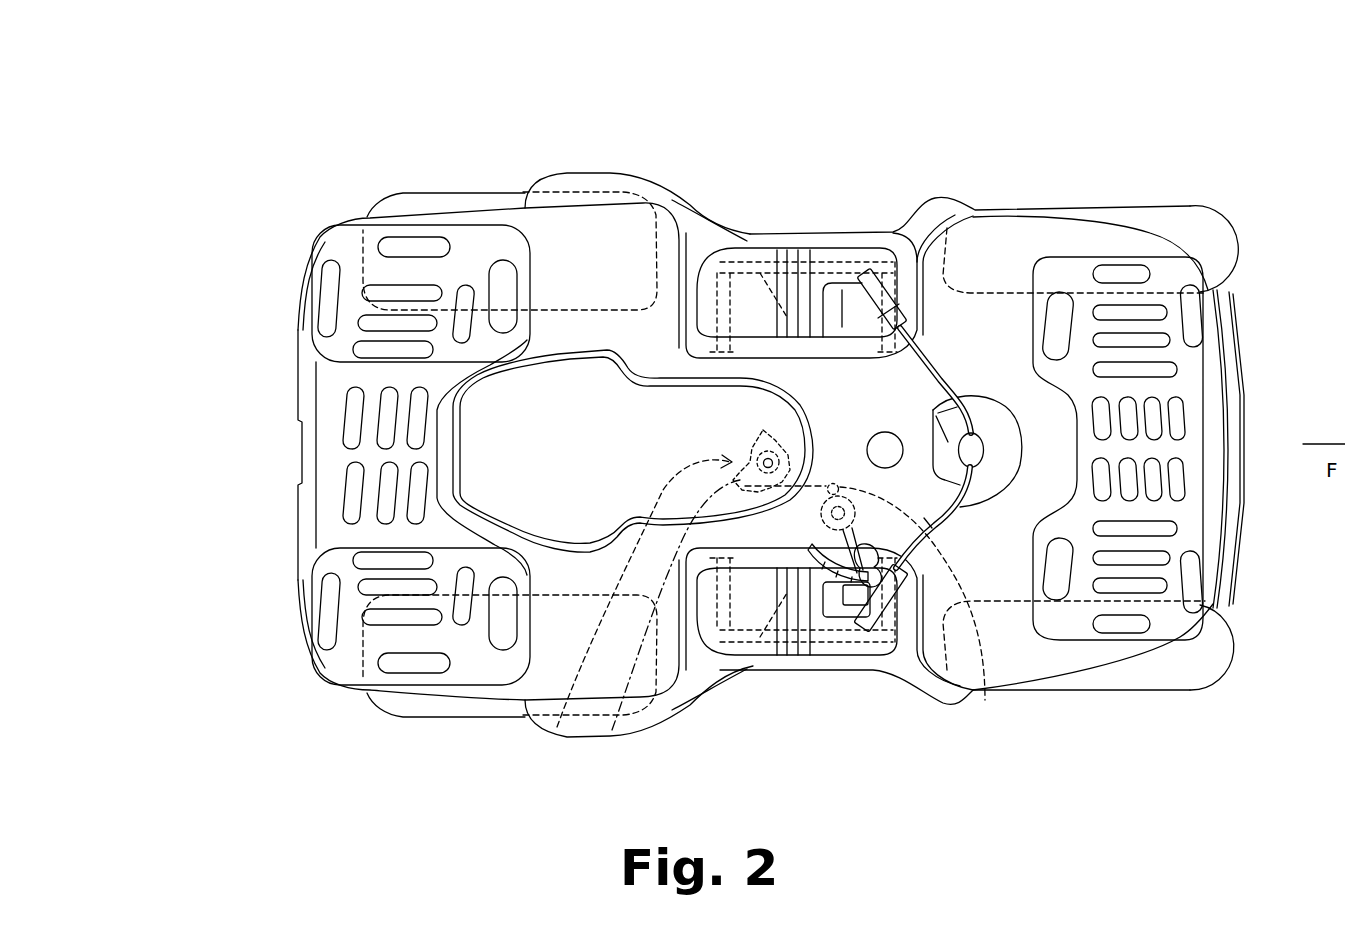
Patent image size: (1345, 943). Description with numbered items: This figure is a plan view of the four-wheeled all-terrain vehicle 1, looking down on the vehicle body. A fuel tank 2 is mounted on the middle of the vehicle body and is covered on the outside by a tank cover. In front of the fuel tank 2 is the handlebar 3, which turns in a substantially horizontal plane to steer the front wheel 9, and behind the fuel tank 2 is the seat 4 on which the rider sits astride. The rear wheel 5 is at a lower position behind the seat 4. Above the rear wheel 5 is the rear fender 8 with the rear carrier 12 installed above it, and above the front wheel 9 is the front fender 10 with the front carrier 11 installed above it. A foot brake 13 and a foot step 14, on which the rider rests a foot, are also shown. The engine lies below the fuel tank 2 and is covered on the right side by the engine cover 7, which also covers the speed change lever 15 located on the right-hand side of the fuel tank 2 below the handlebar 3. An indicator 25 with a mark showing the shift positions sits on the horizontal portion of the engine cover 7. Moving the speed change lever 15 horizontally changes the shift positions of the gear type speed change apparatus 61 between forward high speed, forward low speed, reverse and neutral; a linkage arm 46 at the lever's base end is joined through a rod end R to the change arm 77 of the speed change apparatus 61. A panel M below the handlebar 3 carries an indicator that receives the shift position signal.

The four-wheeled all-terrain vehicle 1 is at (981, 96).
The fuel tank 2 is at (846, 415).
The handlebar 3 is at (930, 410).
The seat 4 is at (627, 420).
The rear wheel 5 is at (408, 196).
The engine cover 7 is at (808, 553).
The rear fender 8 is at (508, 197).
The front wheel 9 is at (1183, 670).
The front fender 10 is at (1030, 660).
The front carrier 11 is at (1077, 617).
The rear carrier 12 is at (332, 500).
The foot brake 13 is at (850, 605).
The foot step 14 is at (760, 548).
The speed change lever 15 is at (829, 592).
The indicator 25 is at (848, 588).
The linkage arm 46 is at (985, 700).
The gear type speed change apparatus 61 is at (557, 727).
The change arm 77 is at (612, 730).
The rod end R is at (840, 487).
The panel M is at (933, 413).